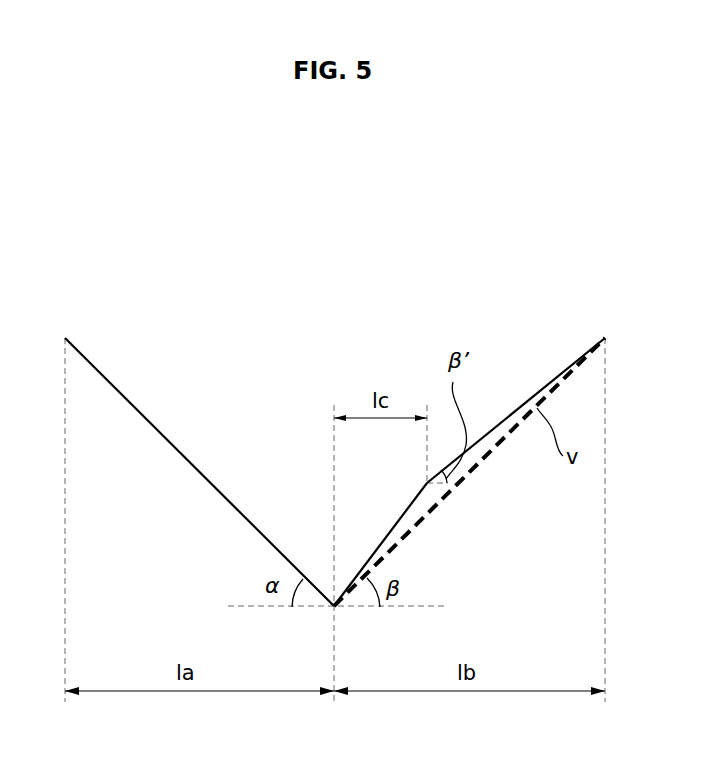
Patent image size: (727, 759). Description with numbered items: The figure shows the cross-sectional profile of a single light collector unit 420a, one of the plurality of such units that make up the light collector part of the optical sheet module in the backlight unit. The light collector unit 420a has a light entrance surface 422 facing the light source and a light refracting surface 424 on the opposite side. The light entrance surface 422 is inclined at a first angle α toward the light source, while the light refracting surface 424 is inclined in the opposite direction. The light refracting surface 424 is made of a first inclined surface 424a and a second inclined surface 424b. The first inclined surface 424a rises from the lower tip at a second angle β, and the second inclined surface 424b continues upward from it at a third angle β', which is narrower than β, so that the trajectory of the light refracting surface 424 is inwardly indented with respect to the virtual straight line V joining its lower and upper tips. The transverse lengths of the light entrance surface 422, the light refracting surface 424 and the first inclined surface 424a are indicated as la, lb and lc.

The light collector unit 420a is at (113, 231).
The light entrance surface 422 is at (143, 415).
The light refracting surface 424 is at (469, 472).
The first inclined surface 424a is at (398, 525).
The second inclined surface 424b is at (496, 421).